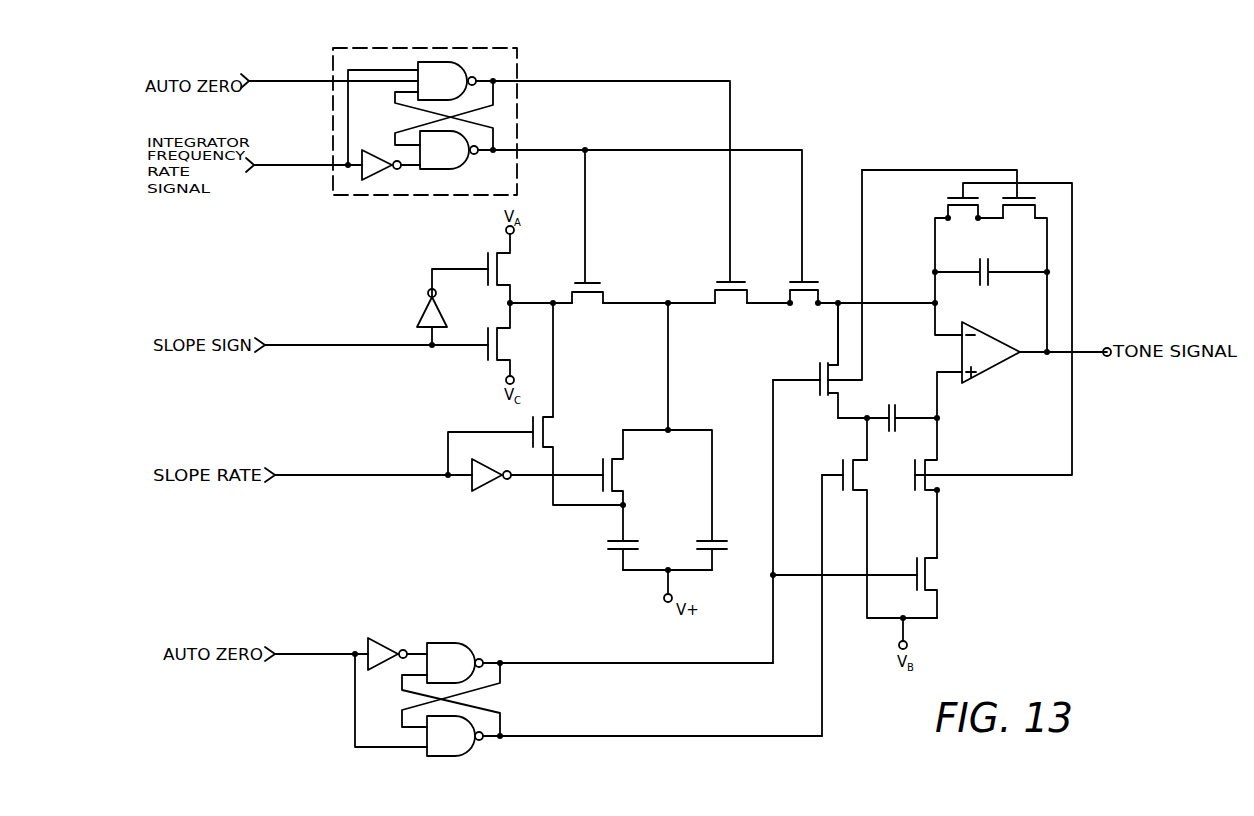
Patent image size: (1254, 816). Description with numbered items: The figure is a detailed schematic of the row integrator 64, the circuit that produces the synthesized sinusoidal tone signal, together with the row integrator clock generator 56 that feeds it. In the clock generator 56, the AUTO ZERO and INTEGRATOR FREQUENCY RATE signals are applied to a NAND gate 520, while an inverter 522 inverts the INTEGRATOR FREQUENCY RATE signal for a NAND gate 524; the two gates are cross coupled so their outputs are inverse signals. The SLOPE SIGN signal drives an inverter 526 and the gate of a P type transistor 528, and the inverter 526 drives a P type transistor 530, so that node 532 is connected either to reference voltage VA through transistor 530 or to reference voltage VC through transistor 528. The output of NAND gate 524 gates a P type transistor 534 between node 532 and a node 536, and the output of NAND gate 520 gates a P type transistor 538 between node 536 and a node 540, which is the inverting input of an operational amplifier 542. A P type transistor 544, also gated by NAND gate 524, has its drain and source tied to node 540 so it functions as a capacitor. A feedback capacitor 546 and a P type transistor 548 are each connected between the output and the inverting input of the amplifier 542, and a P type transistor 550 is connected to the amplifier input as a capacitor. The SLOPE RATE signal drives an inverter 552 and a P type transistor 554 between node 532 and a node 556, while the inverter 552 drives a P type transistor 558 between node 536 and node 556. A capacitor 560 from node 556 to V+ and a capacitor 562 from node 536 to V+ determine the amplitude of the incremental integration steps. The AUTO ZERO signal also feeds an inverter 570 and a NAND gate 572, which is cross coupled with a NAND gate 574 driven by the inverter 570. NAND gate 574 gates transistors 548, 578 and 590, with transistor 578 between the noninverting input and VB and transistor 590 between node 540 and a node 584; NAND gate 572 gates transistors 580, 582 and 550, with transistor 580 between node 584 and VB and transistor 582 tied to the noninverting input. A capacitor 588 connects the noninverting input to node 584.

The row integrator 64 is at (787, 31).
The row integrator clock generator 56 is at (463, 48).
The NAND gate 520 is at (448, 76).
The inverter 522 is at (378, 155).
The NAND gate 524 is at (445, 162).
The inverter 526 is at (417, 316).
The P type transistor 528 is at (508, 333).
The P type transistor 530 is at (507, 272).
The node 532 is at (518, 303).
The P type transistor 534 is at (606, 290).
The node 536 is at (668, 300).
The P type transistor 538 is at (745, 288).
The node 540 is at (885, 303).
The operational amplifier 542 is at (995, 355).
The P type transistor 544 is at (818, 288).
The feedback capacitor 546 is at (990, 278).
The P type transistor 548 is at (1024, 222).
The P type transistor 550 is at (937, 211).
The inverter 552 is at (480, 478).
The P type transistor 554 is at (553, 436).
The node 556 is at (627, 504).
The P type transistor 558 is at (627, 462).
The capacitor 560 is at (607, 558).
The capacitor 562 is at (722, 552).
The inverter 570 is at (386, 648).
The NAND gate 572 is at (458, 742).
The NAND gate 574 is at (455, 660).
The P type transistor 578 is at (941, 580).
The transistor 580 is at (870, 468).
The transistor 582 is at (942, 468).
The node 584 is at (862, 428).
The capacitor 588 is at (893, 400).
The transistor 590 is at (814, 368).